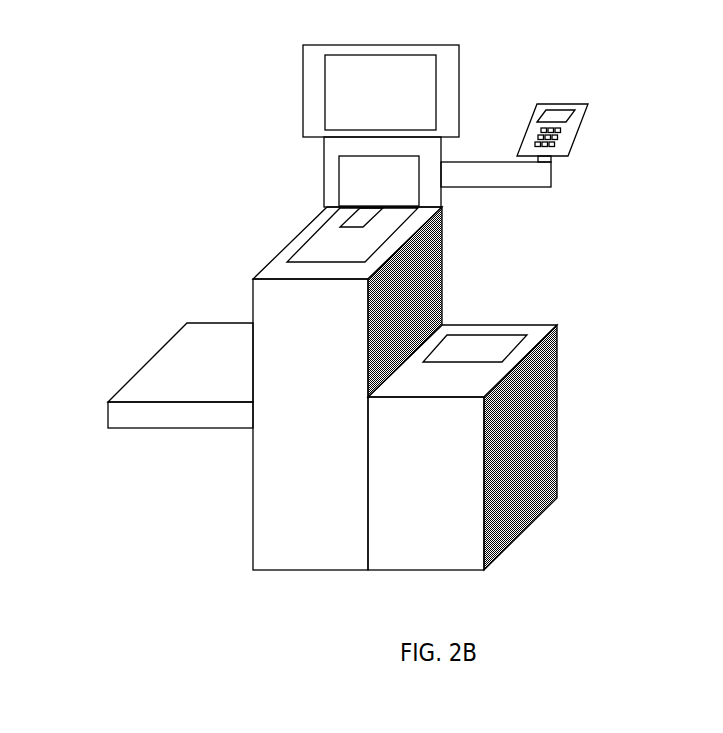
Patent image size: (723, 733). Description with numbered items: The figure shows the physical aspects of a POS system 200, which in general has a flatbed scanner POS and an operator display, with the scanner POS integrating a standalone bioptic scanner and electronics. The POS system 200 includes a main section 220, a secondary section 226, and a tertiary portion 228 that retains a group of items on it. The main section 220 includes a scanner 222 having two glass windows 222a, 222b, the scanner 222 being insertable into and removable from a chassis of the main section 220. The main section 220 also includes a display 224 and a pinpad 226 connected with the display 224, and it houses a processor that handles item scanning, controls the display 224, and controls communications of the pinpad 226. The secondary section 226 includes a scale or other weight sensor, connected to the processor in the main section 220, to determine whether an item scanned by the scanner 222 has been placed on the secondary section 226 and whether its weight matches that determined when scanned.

The POS system 200 is at (683, 238).
The main section 220 is at (252, 295).
The scanner 222 is at (312, 247).
The window 222a is at (355, 220).
The window 222b is at (342, 182).
The display 224 is at (303, 97).
The secondary section / pinpad 226 is at (573, 102).
The tertiary portion 228 is at (156, 353).